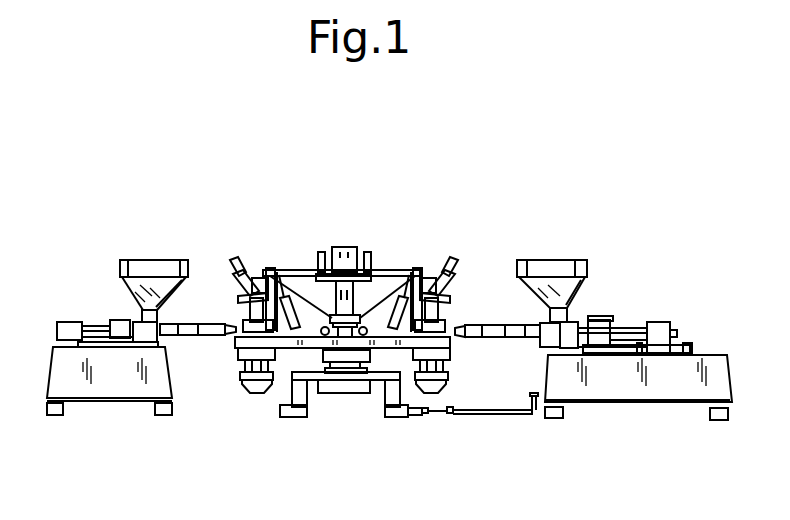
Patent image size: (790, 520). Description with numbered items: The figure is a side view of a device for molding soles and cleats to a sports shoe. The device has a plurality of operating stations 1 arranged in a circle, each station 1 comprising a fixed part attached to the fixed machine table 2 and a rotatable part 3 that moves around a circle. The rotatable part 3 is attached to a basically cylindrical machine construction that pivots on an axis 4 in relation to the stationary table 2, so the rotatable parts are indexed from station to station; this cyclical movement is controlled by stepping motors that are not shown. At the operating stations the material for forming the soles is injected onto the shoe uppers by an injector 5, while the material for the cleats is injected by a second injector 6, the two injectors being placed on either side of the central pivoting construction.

The operating station 1 is at (472, 266).
The fixed machine table 2 is at (372, 391).
The rotatable part 3 is at (437, 347).
The axis 4 is at (344, 216).
The injector 5 is at (595, 328).
The injector 6 is at (120, 318).